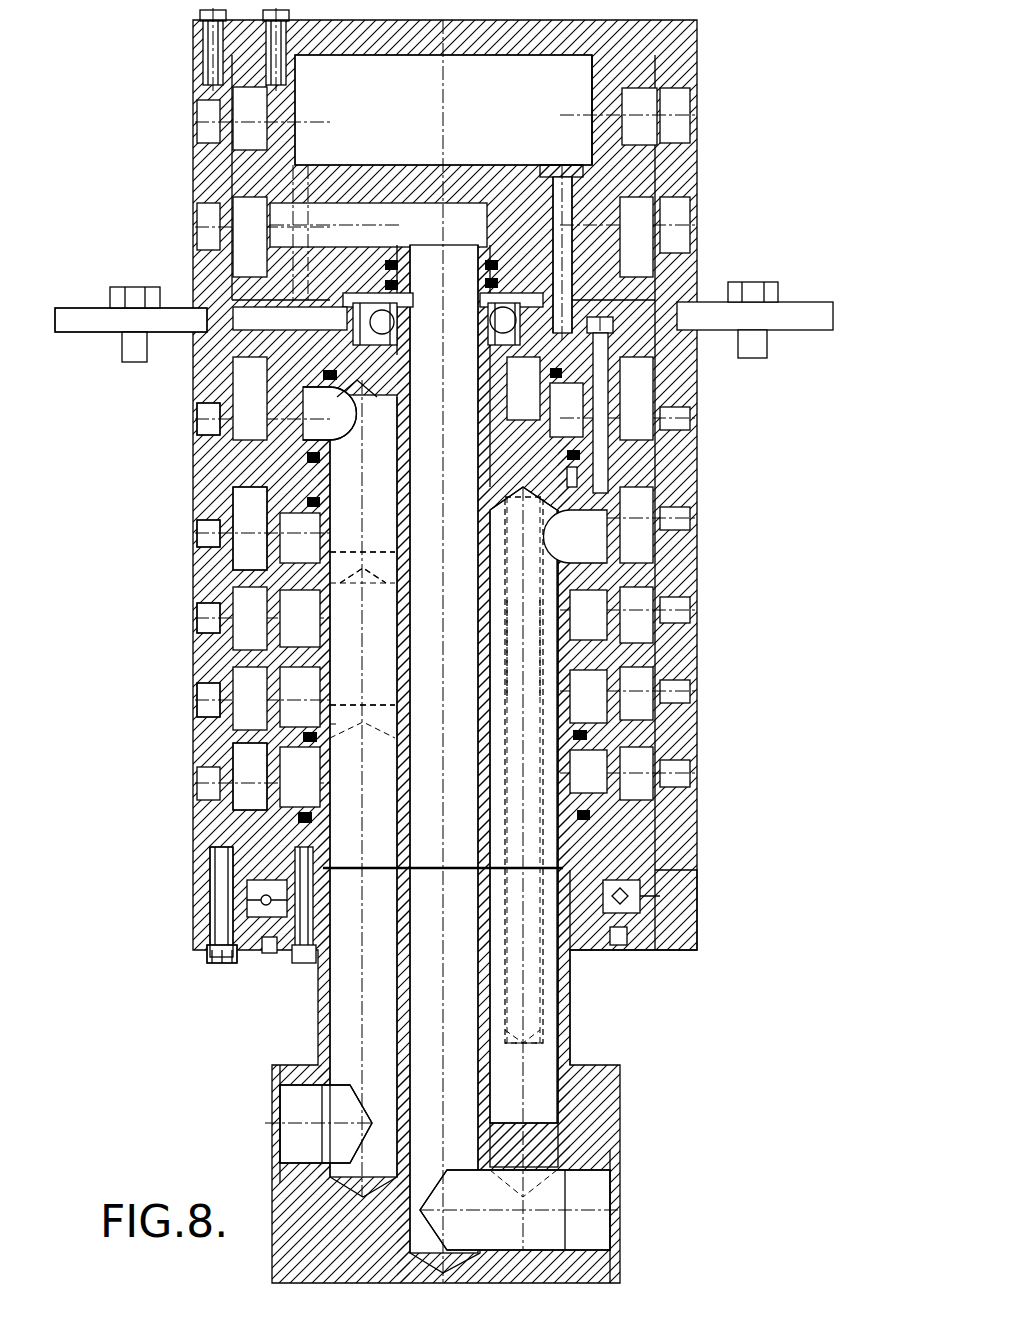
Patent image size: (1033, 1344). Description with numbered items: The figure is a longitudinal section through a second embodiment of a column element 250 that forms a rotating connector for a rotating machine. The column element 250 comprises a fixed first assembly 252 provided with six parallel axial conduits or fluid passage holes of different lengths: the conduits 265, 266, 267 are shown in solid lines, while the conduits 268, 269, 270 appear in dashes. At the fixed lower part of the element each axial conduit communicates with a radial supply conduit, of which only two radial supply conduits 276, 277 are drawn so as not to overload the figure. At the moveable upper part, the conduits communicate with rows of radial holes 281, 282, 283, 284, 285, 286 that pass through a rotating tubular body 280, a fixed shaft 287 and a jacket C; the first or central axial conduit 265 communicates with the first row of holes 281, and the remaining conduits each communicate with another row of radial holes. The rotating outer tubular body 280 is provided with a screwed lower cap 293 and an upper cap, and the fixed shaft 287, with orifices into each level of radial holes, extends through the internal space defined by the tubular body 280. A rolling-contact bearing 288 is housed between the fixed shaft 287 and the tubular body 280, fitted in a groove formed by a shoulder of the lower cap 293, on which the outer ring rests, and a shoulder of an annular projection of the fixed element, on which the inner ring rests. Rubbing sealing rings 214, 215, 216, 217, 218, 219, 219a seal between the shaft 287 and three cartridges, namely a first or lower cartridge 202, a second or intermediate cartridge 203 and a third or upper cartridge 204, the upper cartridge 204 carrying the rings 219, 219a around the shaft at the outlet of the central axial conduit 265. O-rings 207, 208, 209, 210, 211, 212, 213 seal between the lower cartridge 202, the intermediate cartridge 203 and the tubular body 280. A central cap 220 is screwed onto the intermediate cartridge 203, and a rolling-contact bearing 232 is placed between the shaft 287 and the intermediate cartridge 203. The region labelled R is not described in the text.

The reservoir R is at (440, 100).
The third or upper cartridge 204 is at (382, 272).
The central cap 220 is at (262, 283).
The rubbing sealing ring 219a is at (498, 262).
The first row of radial holes 281 is at (632, 222).
The rubbing sealing ring 219 is at (497, 283).
The rolling-contact bearing 232 is at (507, 318).
The O-ring 213 is at (233, 341).
The second or intermediate cartridge 203 is at (335, 367).
The rubbing sealing ring 218 is at (300, 388).
The O-ring 212 is at (237, 452).
The rubbing sealing ring 217 is at (237, 475).
The O-ring 211 is at (237, 479).
The rubbing sealing ring 216 is at (305, 502).
The axial conduit 270 is at (335, 552).
The O-ring 210 is at (237, 582).
The first or lower cartridge 202 is at (253, 595).
The rotating outer tubular body 280 is at (255, 652).
The O-ring 209 is at (237, 660).
The axial conduit 268 is at (330, 710).
The rubbing sealing ring 215 is at (240, 738).
The O-ring 208 is at (237, 740).
The rubbing sealing ring 214 is at (240, 795).
The O-ring 207 is at (237, 813).
The axial conduit 266 is at (255, 842).
The fixed shaft 287 is at (300, 858).
The rolling-contact bearing 288 is at (252, 887).
The screwed lower cap 293 is at (208, 937).
The first or central axial conduit 265 is at (432, 830).
The radial supply conduit 277 is at (305, 1115).
The radial supply conduit 276 is at (585, 1195).
The fixed first assembly 252 is at (592, 1044).
The column element 250 is at (738, 657).
The row of radial holes 282 is at (615, 407).
The jacket C is at (636, 464).
The row of radial holes 283 is at (613, 528).
The row of radial holes 284 is at (590, 605).
The axial conduit 269 is at (553, 645).
The row of radial holes 285 is at (587, 703).
The row of radial holes 286 is at (615, 783).
The axial conduit 267 is at (533, 790).